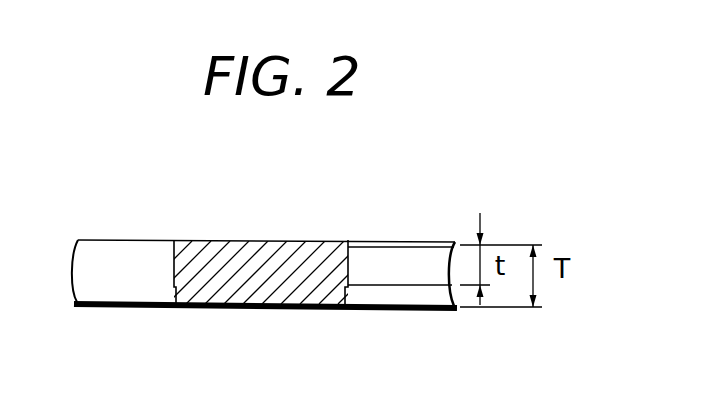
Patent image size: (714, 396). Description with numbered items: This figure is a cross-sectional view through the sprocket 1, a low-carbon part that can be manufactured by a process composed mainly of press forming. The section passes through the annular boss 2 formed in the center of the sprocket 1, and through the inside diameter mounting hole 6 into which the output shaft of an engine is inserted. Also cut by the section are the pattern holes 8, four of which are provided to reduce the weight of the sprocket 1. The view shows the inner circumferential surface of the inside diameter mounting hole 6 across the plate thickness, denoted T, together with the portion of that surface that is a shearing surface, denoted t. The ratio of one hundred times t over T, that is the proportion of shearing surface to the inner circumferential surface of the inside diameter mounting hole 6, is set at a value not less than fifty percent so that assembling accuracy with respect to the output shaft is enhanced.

The sprocket 1 is at (428, 190).
The annular boss 2 is at (277, 242).
The inside diameter mounting hole 6 is at (373, 295).
The pattern holes 8 is at (120, 287).